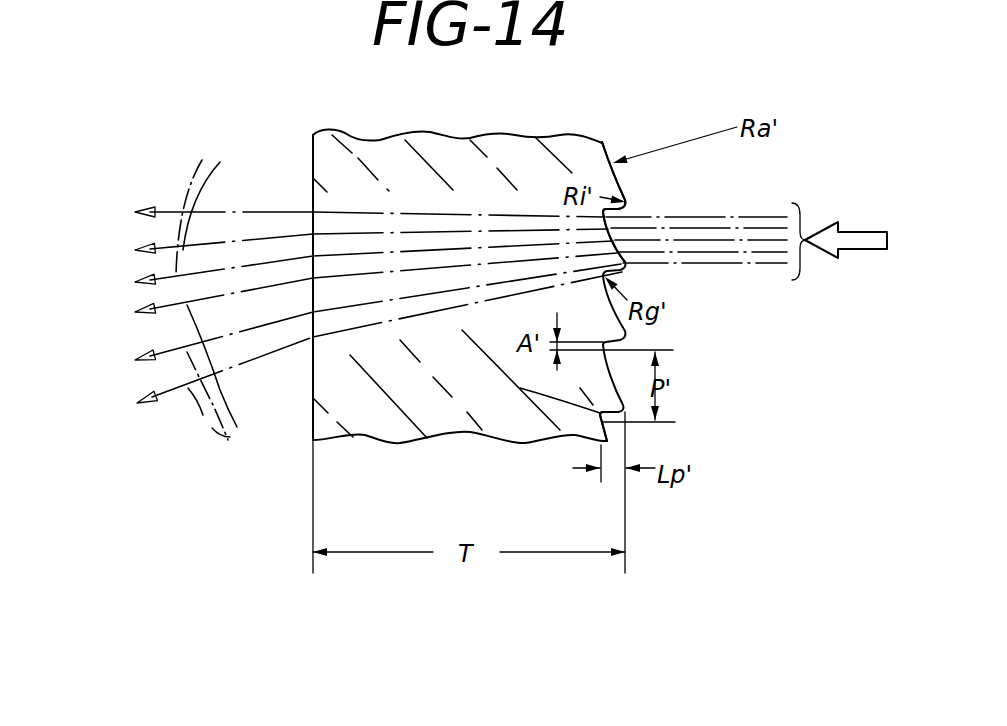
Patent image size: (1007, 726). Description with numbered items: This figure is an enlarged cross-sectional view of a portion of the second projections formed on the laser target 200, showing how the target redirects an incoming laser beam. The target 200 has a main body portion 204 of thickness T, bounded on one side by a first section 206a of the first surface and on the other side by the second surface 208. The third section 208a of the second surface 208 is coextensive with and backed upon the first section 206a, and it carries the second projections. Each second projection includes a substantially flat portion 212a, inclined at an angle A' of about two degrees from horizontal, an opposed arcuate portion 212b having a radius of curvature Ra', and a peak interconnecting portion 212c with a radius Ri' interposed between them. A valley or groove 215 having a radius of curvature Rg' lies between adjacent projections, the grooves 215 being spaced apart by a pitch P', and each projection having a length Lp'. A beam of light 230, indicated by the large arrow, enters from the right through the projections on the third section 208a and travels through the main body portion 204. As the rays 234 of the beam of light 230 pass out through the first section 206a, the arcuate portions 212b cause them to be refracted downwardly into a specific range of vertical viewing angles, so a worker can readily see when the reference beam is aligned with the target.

The laser target 200 is at (358, 104).
The main body portion 204 is at (392, 422).
The first section 206a is at (313, 150).
The second surface 208 is at (614, 162).
The third section 208a is at (681, 420).
The flat portion 212a is at (618, 211).
The arcuate portion 212b is at (625, 197).
The peak interconnecting portion 212c is at (618, 208).
The groove 215 is at (520, 388).
The beam of light 230 is at (848, 252).
The rays 234 is at (229, 304).